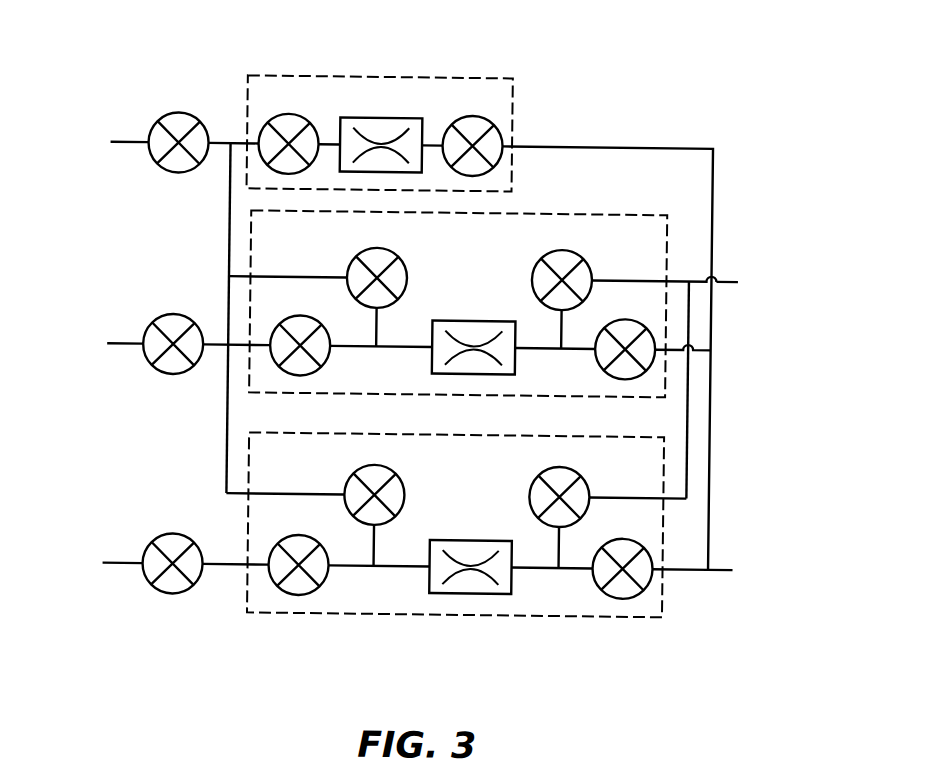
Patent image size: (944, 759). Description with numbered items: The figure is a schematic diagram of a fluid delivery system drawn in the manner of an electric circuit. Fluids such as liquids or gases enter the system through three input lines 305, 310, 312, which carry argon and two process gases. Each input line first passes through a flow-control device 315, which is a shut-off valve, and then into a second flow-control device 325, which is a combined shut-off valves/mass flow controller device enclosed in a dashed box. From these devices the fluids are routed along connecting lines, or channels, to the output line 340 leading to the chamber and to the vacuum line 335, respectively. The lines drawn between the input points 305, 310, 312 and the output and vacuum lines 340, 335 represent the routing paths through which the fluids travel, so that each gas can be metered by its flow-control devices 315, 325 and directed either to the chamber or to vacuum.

The input line 305 is at (130, 142).
The input line 310 is at (119, 346).
The input line 312 is at (122, 566).
The flow-control device (shut-off valve) 315 is at (147, 161).
The flow-control device (combined shut-off valves/mass flow controller device) 325 is at (457, 78).
The vacuum line 335 is at (727, 281).
The output line 340 is at (720, 569).